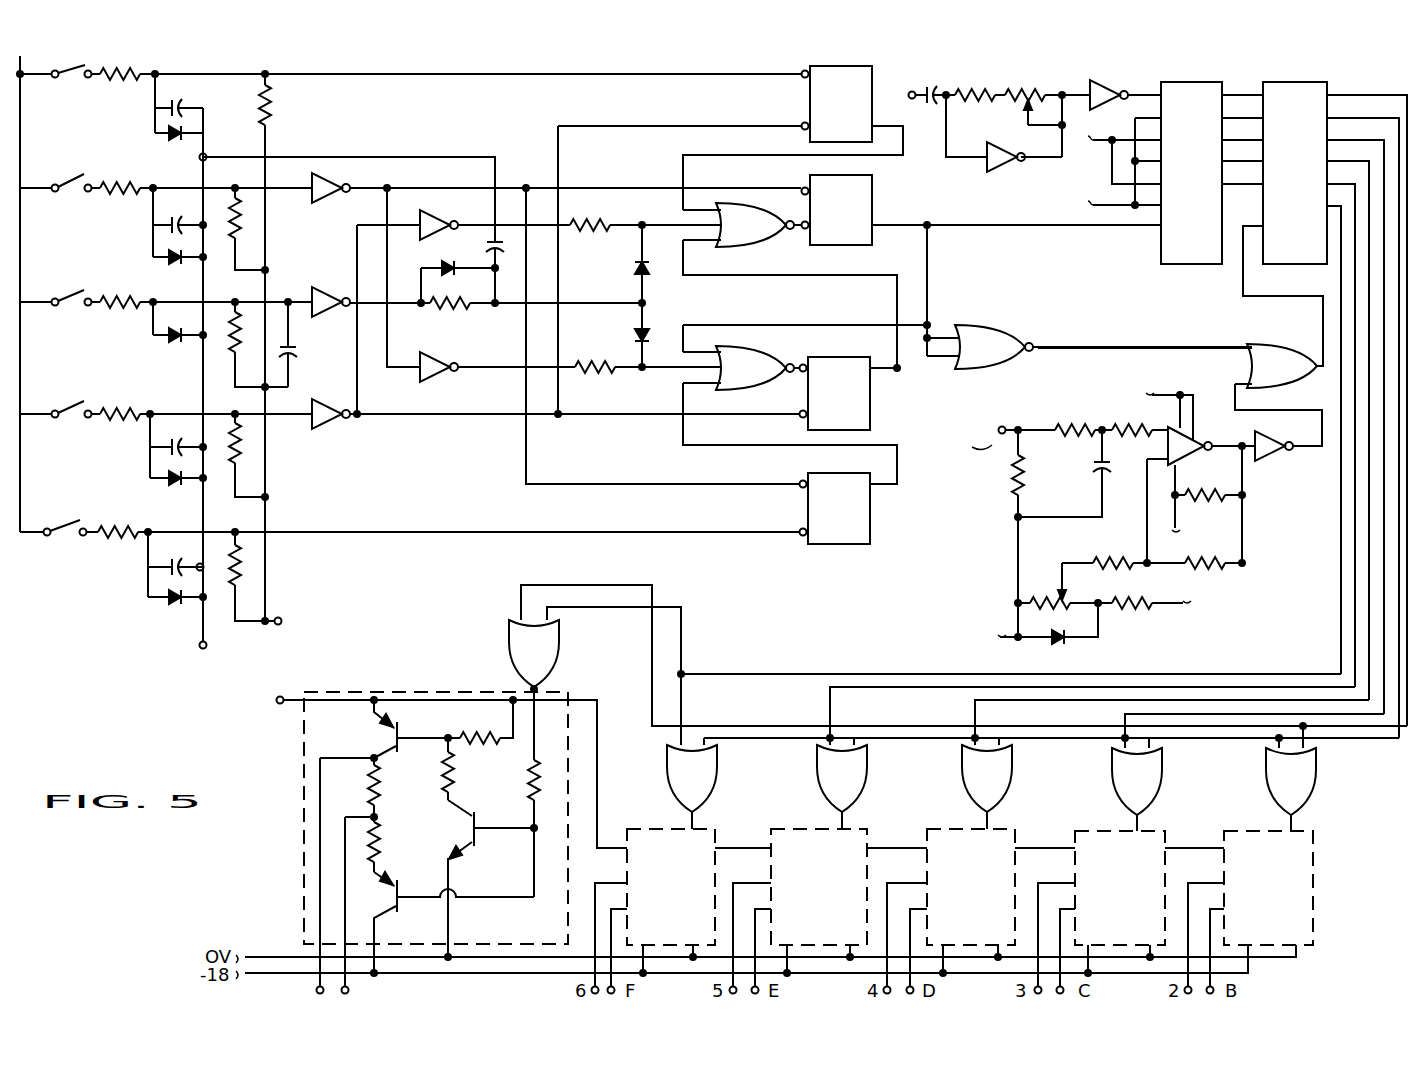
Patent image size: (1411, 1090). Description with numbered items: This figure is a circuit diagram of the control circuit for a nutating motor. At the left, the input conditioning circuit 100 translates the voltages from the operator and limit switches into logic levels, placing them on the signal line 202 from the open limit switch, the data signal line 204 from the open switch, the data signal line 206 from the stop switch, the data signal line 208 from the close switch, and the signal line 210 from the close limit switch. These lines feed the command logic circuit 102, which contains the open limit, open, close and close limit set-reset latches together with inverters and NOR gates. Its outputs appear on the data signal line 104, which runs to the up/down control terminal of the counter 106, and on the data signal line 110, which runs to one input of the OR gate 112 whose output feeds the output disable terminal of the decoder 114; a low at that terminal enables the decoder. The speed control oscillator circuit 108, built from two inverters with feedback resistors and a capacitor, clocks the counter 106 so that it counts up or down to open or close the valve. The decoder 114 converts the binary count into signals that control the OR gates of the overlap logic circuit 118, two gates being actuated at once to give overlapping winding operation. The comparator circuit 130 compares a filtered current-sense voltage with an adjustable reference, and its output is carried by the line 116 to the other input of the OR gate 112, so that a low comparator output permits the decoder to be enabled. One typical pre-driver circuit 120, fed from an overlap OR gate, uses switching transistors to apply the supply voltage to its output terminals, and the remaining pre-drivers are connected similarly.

The input conditioning circuit 100 is at (338, 66).
The command logic circuit 102 is at (440, 66).
The data signal line 104 is at (988, 228).
The counter 106 is at (1163, 250).
The speed control oscillator circuit 108 is at (993, 66).
The data signal line 110 is at (1045, 349).
The OR gate 112 is at (1262, 345).
The decoder 114 is at (1305, 82).
The inverter A8C output line 116 is at (1283, 410).
The overlap logic circuit 118 is at (928, 666).
The pre-driver circuit 120 is at (252, 859).
The comparator circuit 130 is at (1119, 513).
The signal line 202 is at (450, 74).
The data signal line 204 is at (290, 190).
The data signal line 206 is at (288, 300).
The data signal line 208 is at (290, 416).
The signal line 210 is at (338, 530).